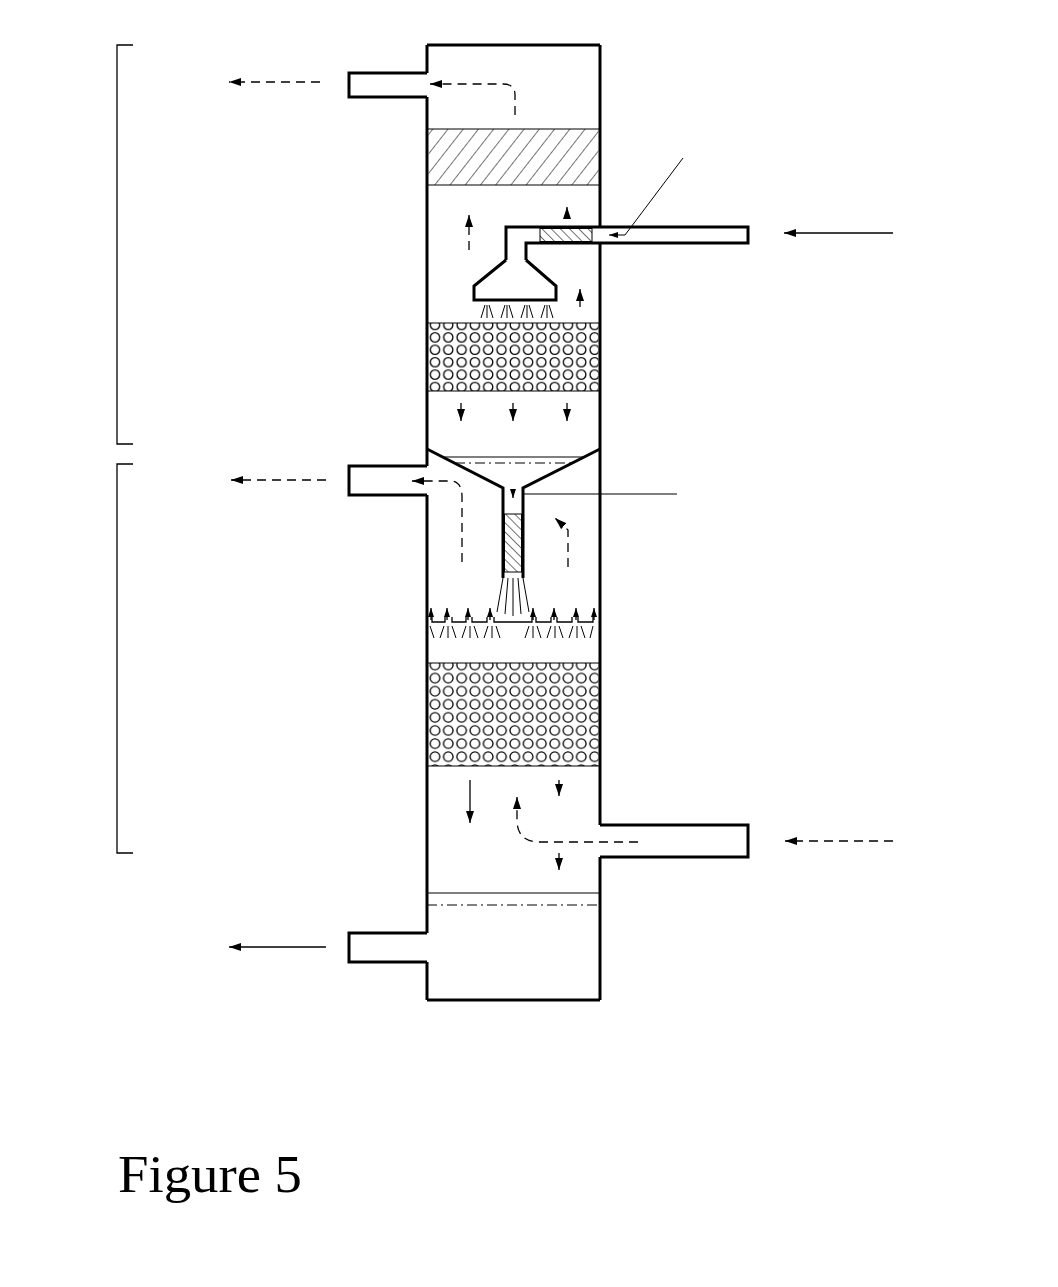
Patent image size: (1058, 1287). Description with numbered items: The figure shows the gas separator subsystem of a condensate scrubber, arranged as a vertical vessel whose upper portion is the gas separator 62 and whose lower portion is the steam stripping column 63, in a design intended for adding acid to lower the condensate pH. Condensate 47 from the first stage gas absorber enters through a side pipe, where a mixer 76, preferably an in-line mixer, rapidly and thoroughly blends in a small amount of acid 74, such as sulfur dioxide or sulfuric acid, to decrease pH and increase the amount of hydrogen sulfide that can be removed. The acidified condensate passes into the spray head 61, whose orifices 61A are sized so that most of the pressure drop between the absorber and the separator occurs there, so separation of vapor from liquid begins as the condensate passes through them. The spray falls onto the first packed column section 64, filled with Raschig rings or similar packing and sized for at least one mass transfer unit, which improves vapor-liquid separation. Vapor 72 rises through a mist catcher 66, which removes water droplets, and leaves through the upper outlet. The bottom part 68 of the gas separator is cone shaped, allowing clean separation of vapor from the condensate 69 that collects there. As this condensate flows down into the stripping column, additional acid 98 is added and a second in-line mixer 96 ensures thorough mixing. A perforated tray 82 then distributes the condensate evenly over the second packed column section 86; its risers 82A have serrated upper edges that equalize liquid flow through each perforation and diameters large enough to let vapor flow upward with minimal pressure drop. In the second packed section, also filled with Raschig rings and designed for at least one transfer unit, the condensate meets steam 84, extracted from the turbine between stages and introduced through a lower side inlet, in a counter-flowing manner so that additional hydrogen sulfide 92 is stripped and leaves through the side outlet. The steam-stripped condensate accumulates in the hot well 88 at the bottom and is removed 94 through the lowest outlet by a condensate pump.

The condensate 47 is at (818, 233).
The spray head 61 is at (485, 268).
The orifices 61A is at (507, 300).
The gas separator 62 is at (95, 244).
The steam stripping column 63 is at (95, 658).
The first packed column section 64 is at (457, 363).
The mist catcher 66 is at (440, 160).
The bottom part 68 is at (440, 447).
The condensate 69 is at (520, 470).
The vapor 72 is at (270, 84).
The acid 74 is at (657, 195).
The mixer 76 is at (575, 243).
The perforated tray 82 is at (440, 620).
The risers 82A is at (575, 620).
The steam 84 is at (832, 841).
The second packed column section 86 is at (540, 718).
The hot well 88 is at (555, 965).
The H2S 92 is at (259, 480).
The removed condensate 94 is at (268, 945).
The second in-line mixer 96 is at (522, 542).
The acid 98 is at (635, 492).